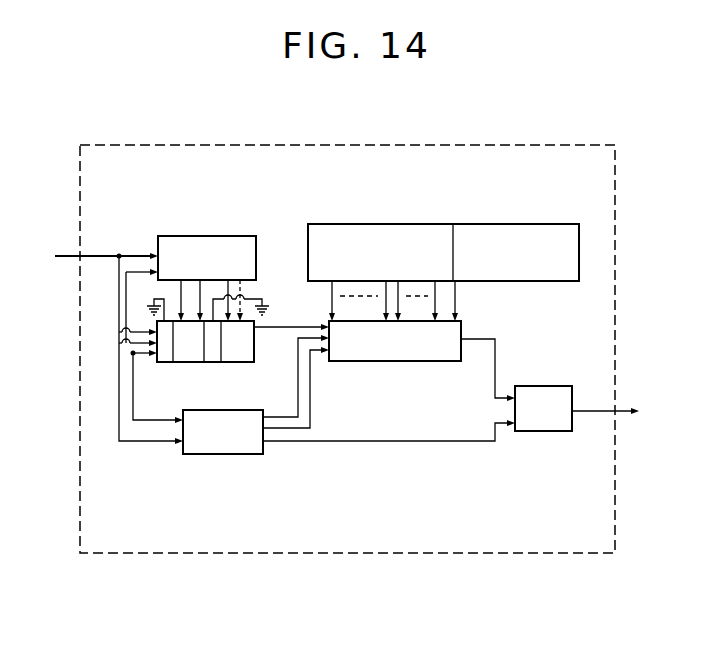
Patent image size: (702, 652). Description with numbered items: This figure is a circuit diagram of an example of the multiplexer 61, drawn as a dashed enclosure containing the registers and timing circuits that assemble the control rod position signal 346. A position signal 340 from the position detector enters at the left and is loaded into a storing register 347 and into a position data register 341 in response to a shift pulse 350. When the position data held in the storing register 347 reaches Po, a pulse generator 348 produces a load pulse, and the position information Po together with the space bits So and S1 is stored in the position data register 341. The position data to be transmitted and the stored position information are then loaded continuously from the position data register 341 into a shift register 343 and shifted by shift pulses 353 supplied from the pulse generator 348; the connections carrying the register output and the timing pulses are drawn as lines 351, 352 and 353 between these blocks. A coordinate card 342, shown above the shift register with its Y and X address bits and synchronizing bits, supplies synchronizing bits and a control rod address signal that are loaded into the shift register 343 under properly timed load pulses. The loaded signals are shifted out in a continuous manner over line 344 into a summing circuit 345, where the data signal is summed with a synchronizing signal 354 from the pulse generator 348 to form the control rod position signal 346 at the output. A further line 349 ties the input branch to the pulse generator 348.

The position signal 340 is at (100, 256).
The position data register 341 is at (198, 362).
The coordinate card 342 is at (425, 224).
The shift register 343 is at (461, 321).
The serial data line 344 is at (495, 359).
The summing circuit 345 is at (549, 386).
The control rod position signal 346 is at (600, 411).
The storing register 347 is at (204, 236).
The pulse generator 348 is at (249, 454).
The clock line 349 is at (118, 410).
The shift pulse 350 is at (133, 400).
The serial output line 351 is at (294, 327).
The load signal line 352 is at (298, 390).
The shift pulses 353 is at (310, 410).
The synchronizing signal 354 is at (453, 441).
The multiplexer 61 is at (606, 549).